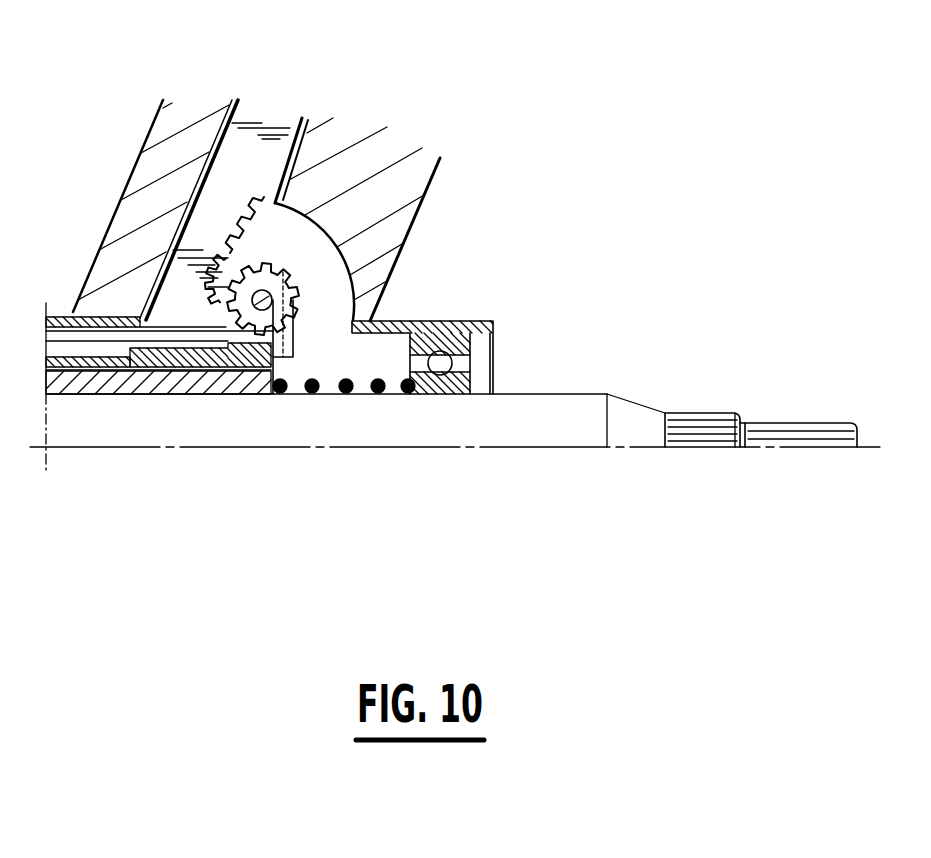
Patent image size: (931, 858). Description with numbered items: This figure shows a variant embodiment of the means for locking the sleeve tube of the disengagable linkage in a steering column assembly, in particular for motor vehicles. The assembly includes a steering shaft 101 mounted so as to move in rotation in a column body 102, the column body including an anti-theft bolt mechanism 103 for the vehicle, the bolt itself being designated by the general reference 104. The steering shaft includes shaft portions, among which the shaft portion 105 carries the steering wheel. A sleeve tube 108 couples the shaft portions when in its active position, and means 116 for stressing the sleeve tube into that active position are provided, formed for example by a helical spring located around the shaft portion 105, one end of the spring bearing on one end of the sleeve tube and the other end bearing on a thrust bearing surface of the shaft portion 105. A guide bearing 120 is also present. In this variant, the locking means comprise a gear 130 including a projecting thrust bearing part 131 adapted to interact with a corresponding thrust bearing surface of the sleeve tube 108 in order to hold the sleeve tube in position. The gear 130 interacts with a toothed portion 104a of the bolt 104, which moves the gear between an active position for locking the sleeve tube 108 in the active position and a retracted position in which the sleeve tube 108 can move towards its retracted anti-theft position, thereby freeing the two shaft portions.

The steering shaft 101 is at (632, 396).
The column body 102 is at (62, 305).
The anti-theft bolt mechanism 103 is at (116, 185).
The bolt 104 is at (269, 120).
The toothed portion 104a is at (234, 248).
The shaft portion 105 is at (110, 420).
The sleeve tube 108 is at (228, 400).
The stressing means 116 is at (348, 398).
The guide bearing 120 is at (482, 356).
The gear 130 is at (305, 270).
The projecting thrust bearing part 131 is at (298, 326).